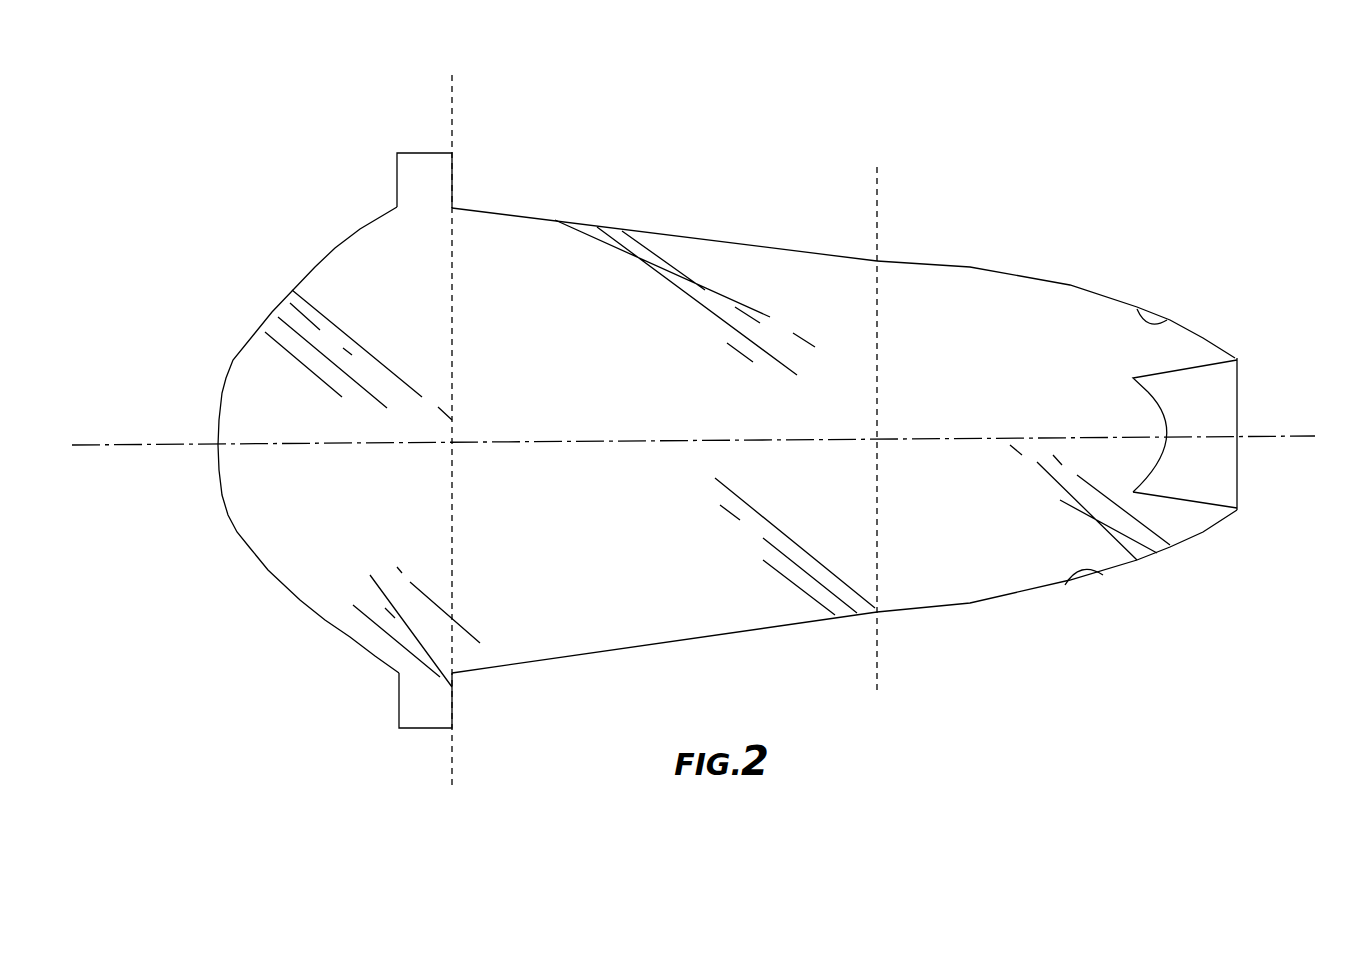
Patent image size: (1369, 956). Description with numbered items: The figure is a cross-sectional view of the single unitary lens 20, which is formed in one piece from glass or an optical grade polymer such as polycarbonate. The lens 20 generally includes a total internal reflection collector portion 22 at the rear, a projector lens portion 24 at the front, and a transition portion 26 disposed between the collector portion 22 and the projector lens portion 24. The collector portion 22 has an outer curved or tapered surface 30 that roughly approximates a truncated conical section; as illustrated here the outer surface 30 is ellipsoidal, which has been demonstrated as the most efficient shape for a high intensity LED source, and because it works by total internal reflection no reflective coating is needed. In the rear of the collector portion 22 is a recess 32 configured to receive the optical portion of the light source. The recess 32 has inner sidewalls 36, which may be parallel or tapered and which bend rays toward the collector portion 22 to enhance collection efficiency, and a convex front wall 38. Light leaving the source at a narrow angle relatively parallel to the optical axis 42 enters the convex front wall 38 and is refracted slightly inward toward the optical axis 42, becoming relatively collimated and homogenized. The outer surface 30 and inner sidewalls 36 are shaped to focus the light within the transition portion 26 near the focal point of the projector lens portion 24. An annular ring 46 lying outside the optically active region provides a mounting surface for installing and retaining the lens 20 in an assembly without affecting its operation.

The lens 20 is at (997, 163).
The total internal reflection collector portion 22 is at (1075, 307).
The projector lens portion 24 is at (320, 275).
The transition portion 26 is at (705, 255).
The outer surface 30 is at (1167, 320).
The recess 32 is at (1223, 407).
The inner sidewalls 36 is at (1190, 500).
The front wall 38 is at (1158, 410).
The optical axis 42 is at (117, 445).
The annular ring 46 is at (418, 165).